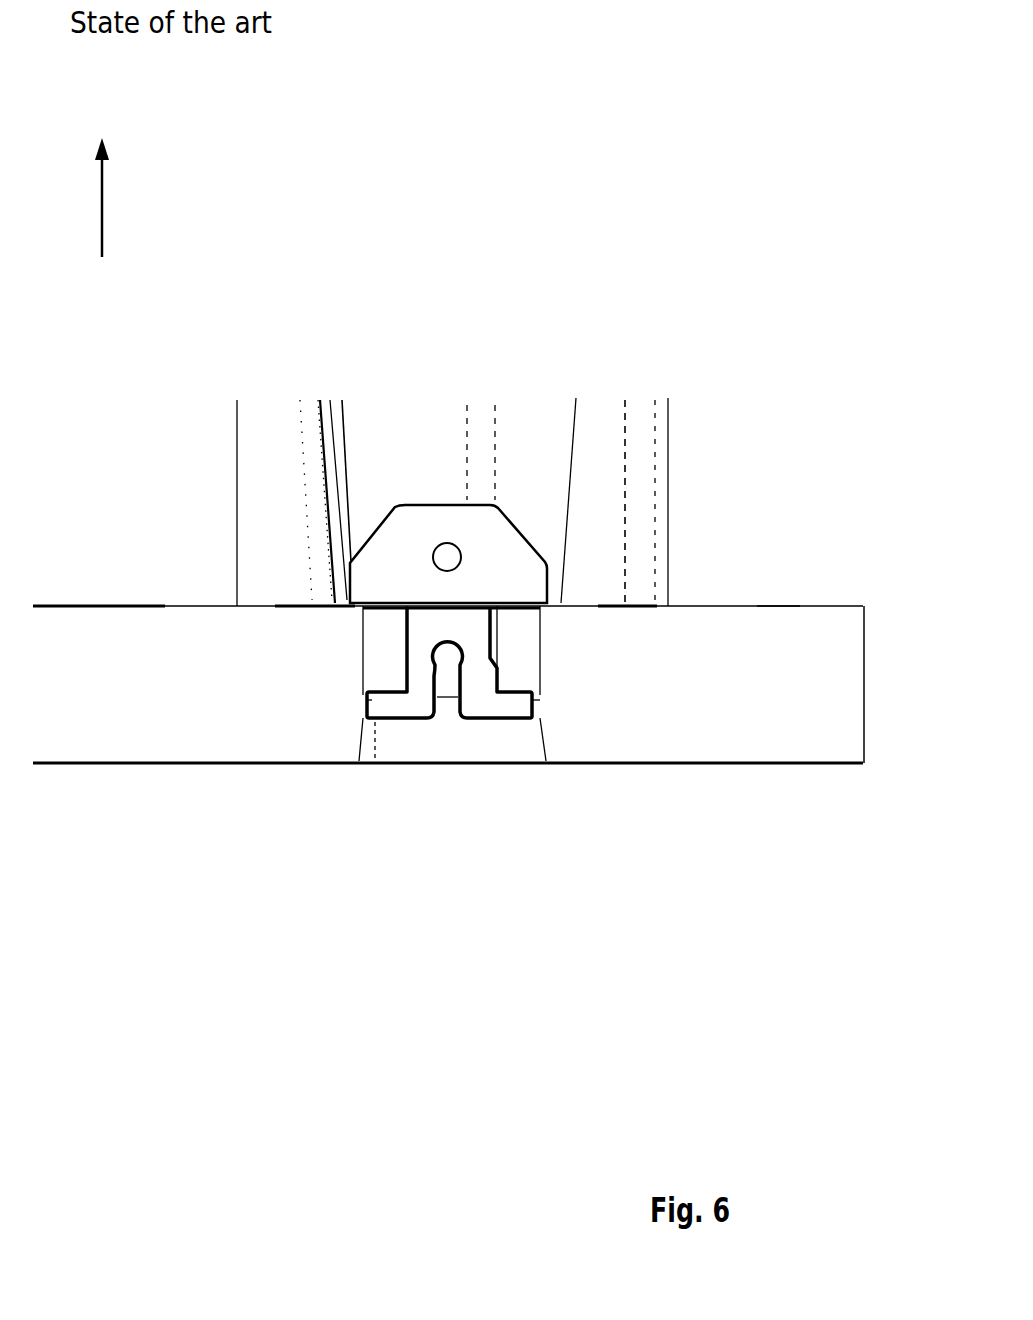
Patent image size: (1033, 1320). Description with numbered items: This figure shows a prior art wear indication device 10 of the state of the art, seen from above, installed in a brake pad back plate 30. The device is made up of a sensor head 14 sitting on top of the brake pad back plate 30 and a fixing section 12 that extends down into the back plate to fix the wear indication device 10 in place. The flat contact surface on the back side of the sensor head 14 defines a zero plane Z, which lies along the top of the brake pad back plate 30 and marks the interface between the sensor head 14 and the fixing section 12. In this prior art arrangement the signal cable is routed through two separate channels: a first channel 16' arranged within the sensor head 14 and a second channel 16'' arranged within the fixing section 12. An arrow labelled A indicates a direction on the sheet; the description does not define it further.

The wear indication device 10 is at (548, 519).
The fixing section 12 is at (488, 748).
The sensor head 14 is at (424, 514).
The first channel 16' is at (520, 379).
The second channel 16'' is at (408, 815).
The brake pad back plate 30 is at (329, 738).
The direction A is at (89, 197).
The zero plane Z is at (757, 606).